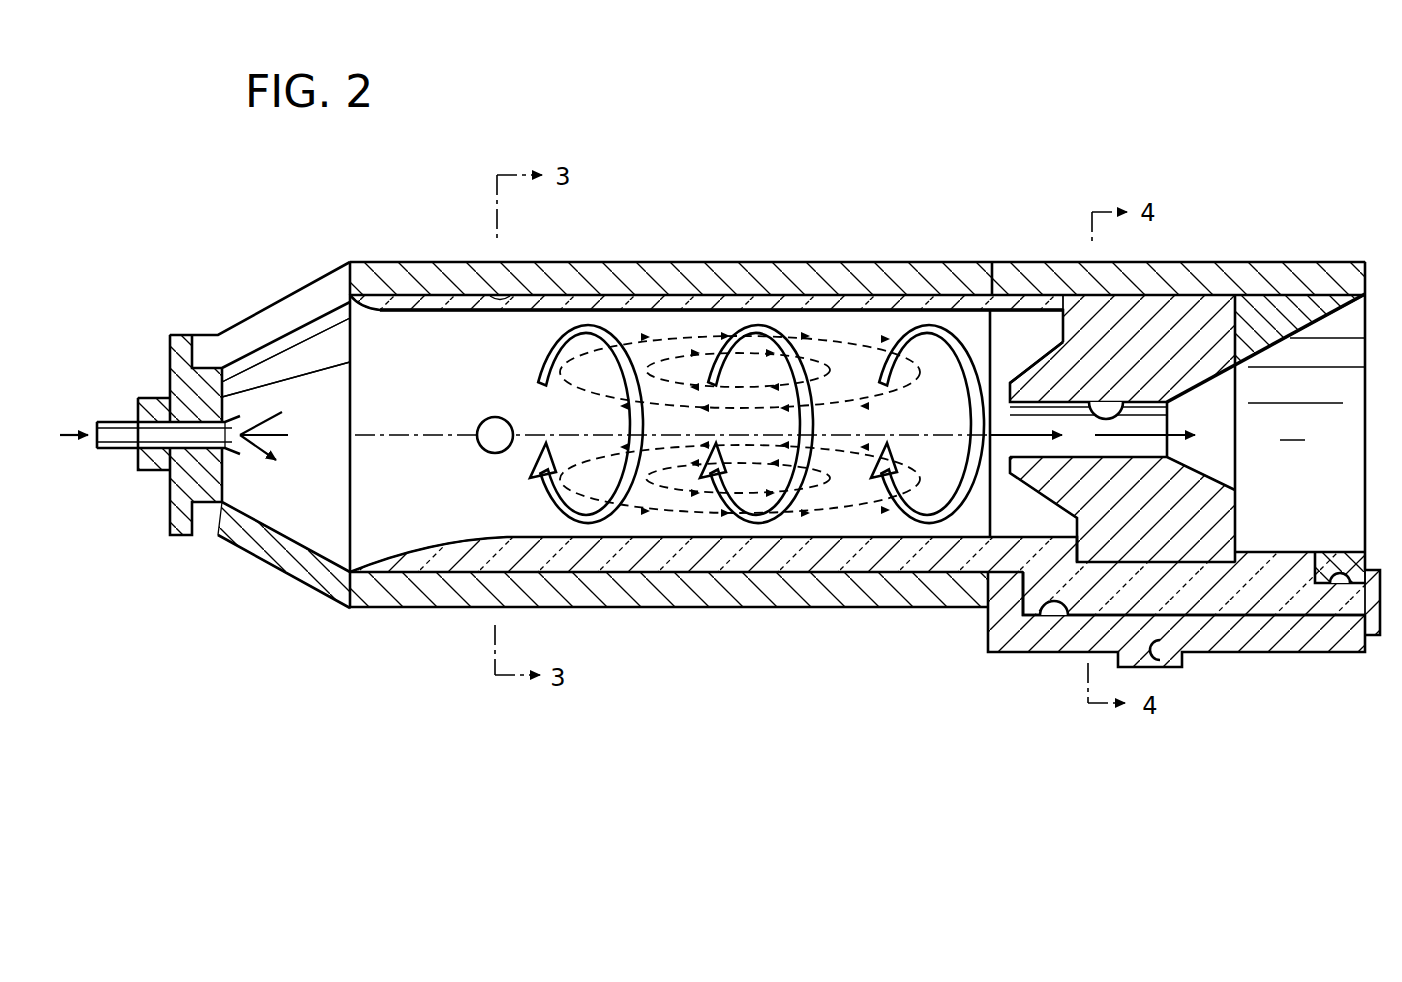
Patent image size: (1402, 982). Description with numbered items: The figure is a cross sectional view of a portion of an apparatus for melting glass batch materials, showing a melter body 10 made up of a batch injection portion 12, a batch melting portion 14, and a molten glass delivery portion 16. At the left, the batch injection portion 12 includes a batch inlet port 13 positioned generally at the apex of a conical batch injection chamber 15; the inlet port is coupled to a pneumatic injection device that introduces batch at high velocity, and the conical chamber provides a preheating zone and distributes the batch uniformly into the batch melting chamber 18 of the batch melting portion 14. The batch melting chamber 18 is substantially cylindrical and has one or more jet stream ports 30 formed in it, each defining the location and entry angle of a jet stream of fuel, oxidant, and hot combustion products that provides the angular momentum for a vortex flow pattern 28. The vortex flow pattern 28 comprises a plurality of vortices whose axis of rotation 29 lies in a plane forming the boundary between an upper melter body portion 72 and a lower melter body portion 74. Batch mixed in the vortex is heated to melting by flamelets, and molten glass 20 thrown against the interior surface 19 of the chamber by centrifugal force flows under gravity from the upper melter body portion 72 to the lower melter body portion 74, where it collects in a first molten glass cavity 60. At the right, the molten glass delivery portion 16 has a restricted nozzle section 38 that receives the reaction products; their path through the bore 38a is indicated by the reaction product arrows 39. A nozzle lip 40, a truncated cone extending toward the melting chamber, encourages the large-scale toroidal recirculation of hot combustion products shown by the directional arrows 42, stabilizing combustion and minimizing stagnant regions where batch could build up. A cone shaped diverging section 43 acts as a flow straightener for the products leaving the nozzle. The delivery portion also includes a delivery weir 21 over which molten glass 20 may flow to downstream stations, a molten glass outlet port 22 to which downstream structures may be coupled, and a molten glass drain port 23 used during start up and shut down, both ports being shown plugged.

The melter body 10 is at (823, 197).
The batch injection portion 12 is at (248, 304).
The batch inlet port 13 is at (118, 428).
The batch melting portion 14 is at (748, 258).
The conical batch injection chamber 15 is at (331, 452).
The molten glass delivery portion 16 is at (1035, 258).
The batch melting chamber 18 is at (495, 352).
The interior surface 19 is at (497, 298).
The molten glass 20 is at (390, 306).
The delivery weir 21 is at (1340, 572).
The molten glass outlet port 22 is at (1372, 574).
The molten glass drain port 23 is at (1160, 667).
The vortex flow pattern 28 is at (540, 490).
The axis of rotation 29 is at (918, 432).
The jet stream port 30 is at (480, 439).
The restricted nozzle section 38 is at (1182, 376).
The bore 38a is at (1106, 420).
The reaction product arrows 39 is at (1040, 438).
The nozzle lip 40 is at (1036, 364).
The directional arrows 42 is at (857, 340).
The cone shaped diverging section 43 is at (1195, 420).
The first molten glass cavity 60 is at (1047, 612).
The upper melter body portion 72 is at (366, 395).
The lower melter body portion 74 is at (366, 504).